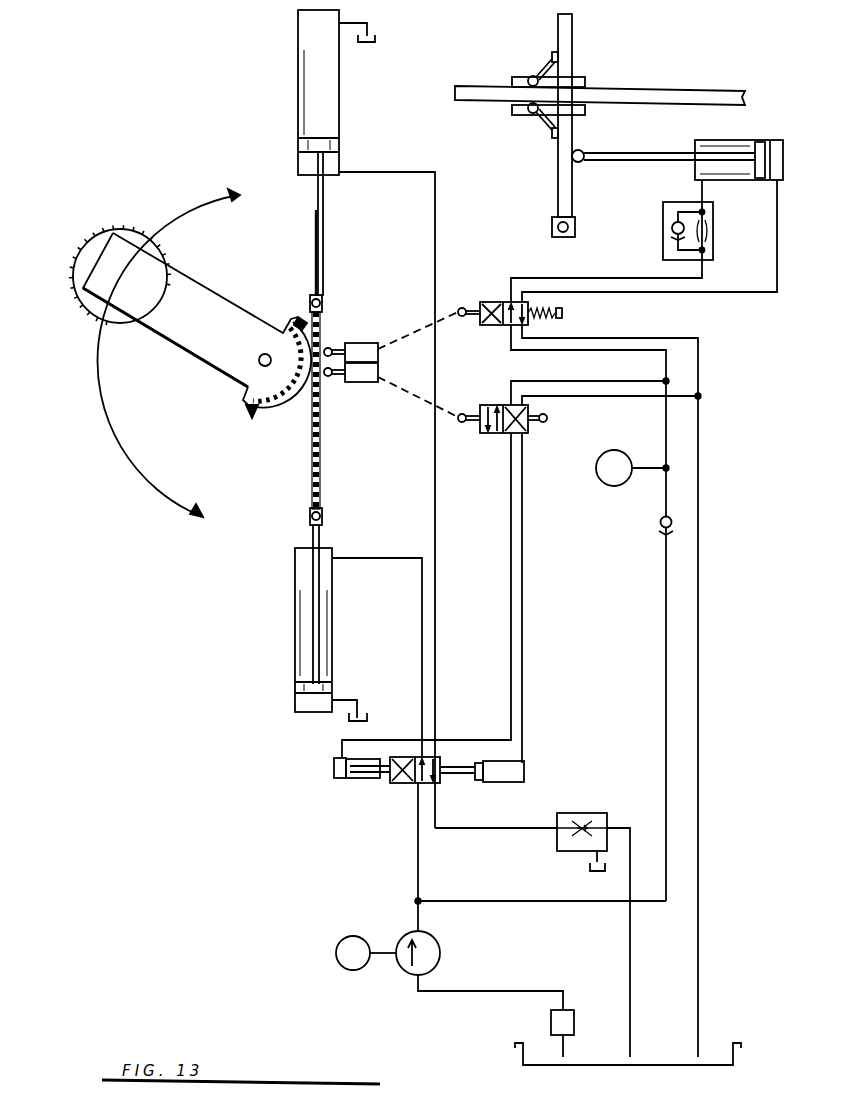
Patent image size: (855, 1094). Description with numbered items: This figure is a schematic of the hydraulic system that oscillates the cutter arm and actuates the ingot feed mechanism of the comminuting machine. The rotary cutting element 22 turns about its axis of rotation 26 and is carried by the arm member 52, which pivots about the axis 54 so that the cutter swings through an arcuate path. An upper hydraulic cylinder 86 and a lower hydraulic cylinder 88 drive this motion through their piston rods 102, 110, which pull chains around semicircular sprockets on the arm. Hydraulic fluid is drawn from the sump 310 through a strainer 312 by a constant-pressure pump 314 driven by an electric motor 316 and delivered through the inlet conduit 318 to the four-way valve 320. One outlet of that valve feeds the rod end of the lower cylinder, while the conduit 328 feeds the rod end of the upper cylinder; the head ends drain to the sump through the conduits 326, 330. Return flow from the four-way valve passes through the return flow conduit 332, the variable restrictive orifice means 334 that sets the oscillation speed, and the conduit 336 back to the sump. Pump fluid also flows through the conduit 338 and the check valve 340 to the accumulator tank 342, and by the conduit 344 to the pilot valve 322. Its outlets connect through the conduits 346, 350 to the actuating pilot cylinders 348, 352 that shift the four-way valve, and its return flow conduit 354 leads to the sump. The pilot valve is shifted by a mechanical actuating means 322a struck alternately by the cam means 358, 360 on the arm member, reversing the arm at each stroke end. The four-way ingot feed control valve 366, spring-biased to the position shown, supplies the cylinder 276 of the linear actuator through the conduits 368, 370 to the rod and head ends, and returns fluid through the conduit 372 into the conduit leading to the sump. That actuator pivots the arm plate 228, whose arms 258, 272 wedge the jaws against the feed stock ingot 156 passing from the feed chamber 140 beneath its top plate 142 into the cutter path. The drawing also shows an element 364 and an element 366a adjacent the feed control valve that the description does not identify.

The rotary cutting element 22 is at (160, 246).
The axis of rotation 26 is at (122, 281).
The arm member 52 is at (188, 338).
The pivot axis 54 is at (261, 365).
The upper hydraulic cylinder 86 is at (298, 82).
The lower hydraulic cylinder 88 is at (294, 626).
The piston rod 102 is at (325, 240).
The piston rod 110 is at (322, 535).
The feed chamber 140 is at (515, 78).
The top plate 142 is at (515, 116).
The feed stock ingot 156 is at (636, 94).
The arm plate 228 is at (560, 181).
The arm 258 is at (545, 62).
The adjustable length arm 272 is at (543, 128).
The cylinder 276 is at (735, 141).
The sump 310 is at (343, 721).
The strainer 312 is at (574, 1026).
The pump 314 is at (435, 941).
The electric motor 316 is at (360, 936).
The inlet conduit 318 is at (417, 842).
The four-way valve 320 is at (407, 790).
The pilot valve 322 is at (496, 404).
The mechanical actuating means 322a is at (360, 382).
The conduit 326 is at (347, 709).
The conduit 328 is at (435, 478).
The conduit 330 is at (372, 31).
The return flow conduit 332 is at (522, 830).
The variable restrictive orifice means 334 is at (576, 813).
The conduit 336 is at (630, 951).
The conduit 338 is at (557, 902).
The check valve 340 is at (661, 528).
The accumulator tank 342 is at (610, 455).
The conduit 344 is at (604, 383).
The conduit 346 is at (510, 514).
The actuating pilot cylinder 348 is at (348, 795).
The conduit 350 is at (522, 549).
The pilot cylinder 352 is at (522, 783).
The return flow conduit 354 is at (574, 396).
The cam means 358 is at (246, 412).
The cam means 360 is at (297, 317).
The hydraulic line 364 is at (606, 352).
The four-way ingot feed control valve 366 is at (498, 328).
The limit switch 366a is at (357, 343).
The conduit 368 is at (632, 282).
The conduit 370 is at (684, 283).
The return flow conduit 372 is at (628, 346).